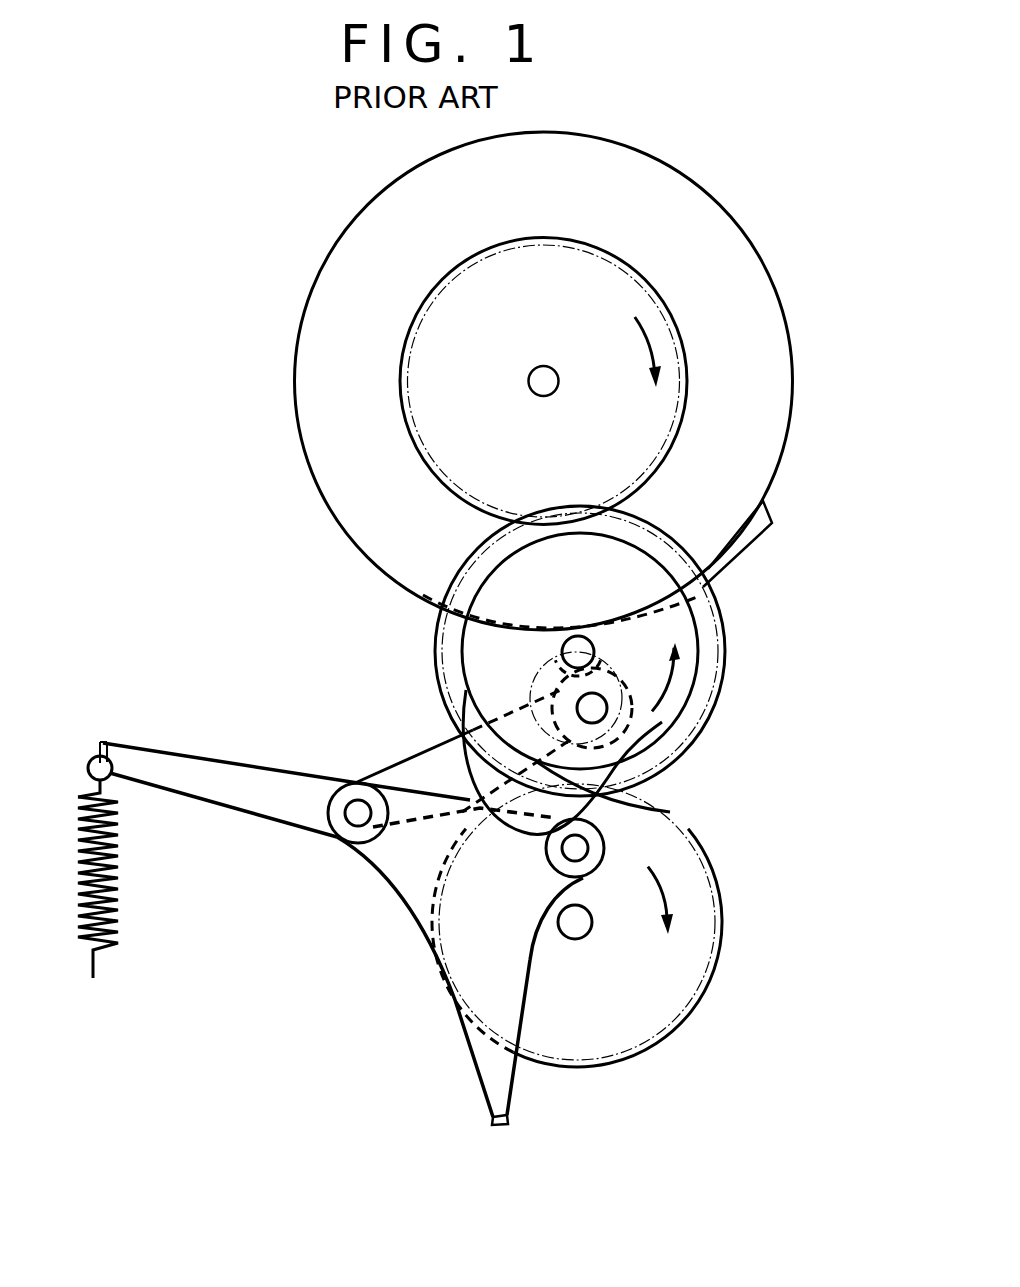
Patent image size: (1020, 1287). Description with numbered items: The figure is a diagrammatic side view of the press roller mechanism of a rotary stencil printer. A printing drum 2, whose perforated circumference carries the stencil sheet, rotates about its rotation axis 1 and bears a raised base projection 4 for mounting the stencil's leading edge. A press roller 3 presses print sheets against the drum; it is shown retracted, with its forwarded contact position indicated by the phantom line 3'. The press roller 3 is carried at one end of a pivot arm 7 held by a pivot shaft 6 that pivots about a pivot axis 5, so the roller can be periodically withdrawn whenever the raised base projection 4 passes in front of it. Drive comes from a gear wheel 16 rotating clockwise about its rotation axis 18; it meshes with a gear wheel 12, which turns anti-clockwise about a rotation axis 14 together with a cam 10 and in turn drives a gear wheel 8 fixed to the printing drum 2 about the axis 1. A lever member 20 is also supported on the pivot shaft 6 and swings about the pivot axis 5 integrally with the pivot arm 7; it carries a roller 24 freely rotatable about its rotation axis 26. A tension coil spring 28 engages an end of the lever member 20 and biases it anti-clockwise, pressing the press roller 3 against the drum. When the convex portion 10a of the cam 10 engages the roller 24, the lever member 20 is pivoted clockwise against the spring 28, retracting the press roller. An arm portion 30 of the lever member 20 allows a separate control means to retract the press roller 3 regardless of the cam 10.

The rotation axis 1 is at (537, 372).
The printing drum 2 is at (796, 356).
The gear wheel 8 is at (687, 424).
The raised base projection 4 is at (755, 545).
The gear wheel 12 is at (718, 664).
The cam 10 is at (455, 668).
The convex portion 10a is at (465, 796).
The pivot arm 7 is at (402, 760).
The rotation axis 14 is at (580, 651).
The press roller 3 is at (601, 694).
The press roller forwarded position 3' is at (560, 689).
The lever member 20 is at (236, 763).
The tension coil spring 28 is at (119, 861).
The pivot axis 5 is at (337, 829).
The pivot shaft 6 is at (358, 822).
The roller 24 is at (597, 866).
The rotation axis 26 is at (575, 848).
The gear wheel 16 is at (722, 887).
The rotation axis 18 is at (575, 924).
The arm portion 30 is at (478, 1073).